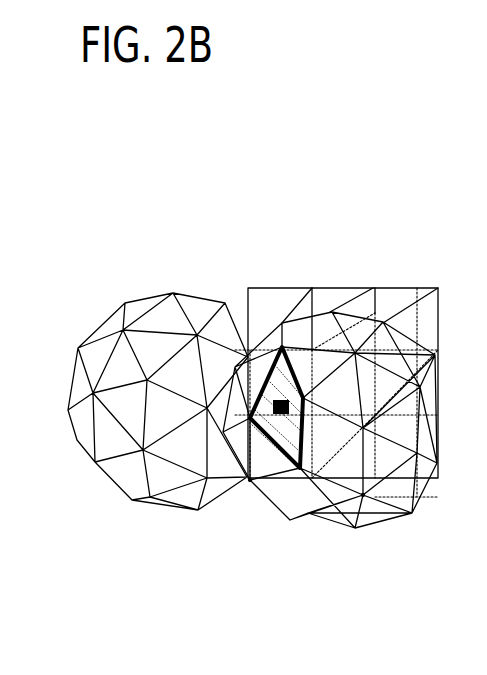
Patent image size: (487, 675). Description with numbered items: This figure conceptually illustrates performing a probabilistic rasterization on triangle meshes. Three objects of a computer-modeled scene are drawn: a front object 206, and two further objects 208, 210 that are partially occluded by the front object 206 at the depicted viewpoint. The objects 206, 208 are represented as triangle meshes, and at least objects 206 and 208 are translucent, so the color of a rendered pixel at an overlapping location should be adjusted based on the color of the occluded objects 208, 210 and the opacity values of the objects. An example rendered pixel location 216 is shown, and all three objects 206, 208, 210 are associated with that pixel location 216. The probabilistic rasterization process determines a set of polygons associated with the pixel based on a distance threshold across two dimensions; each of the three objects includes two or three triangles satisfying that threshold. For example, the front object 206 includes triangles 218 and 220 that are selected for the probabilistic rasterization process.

The front object 206 is at (310, 472).
The occluded object 208 is at (140, 427).
The occluded object 210 is at (402, 290).
The rendered pixel location 216 is at (197, 533).
The triangle 218 is at (421, 524).
The triangle 220 is at (280, 346).